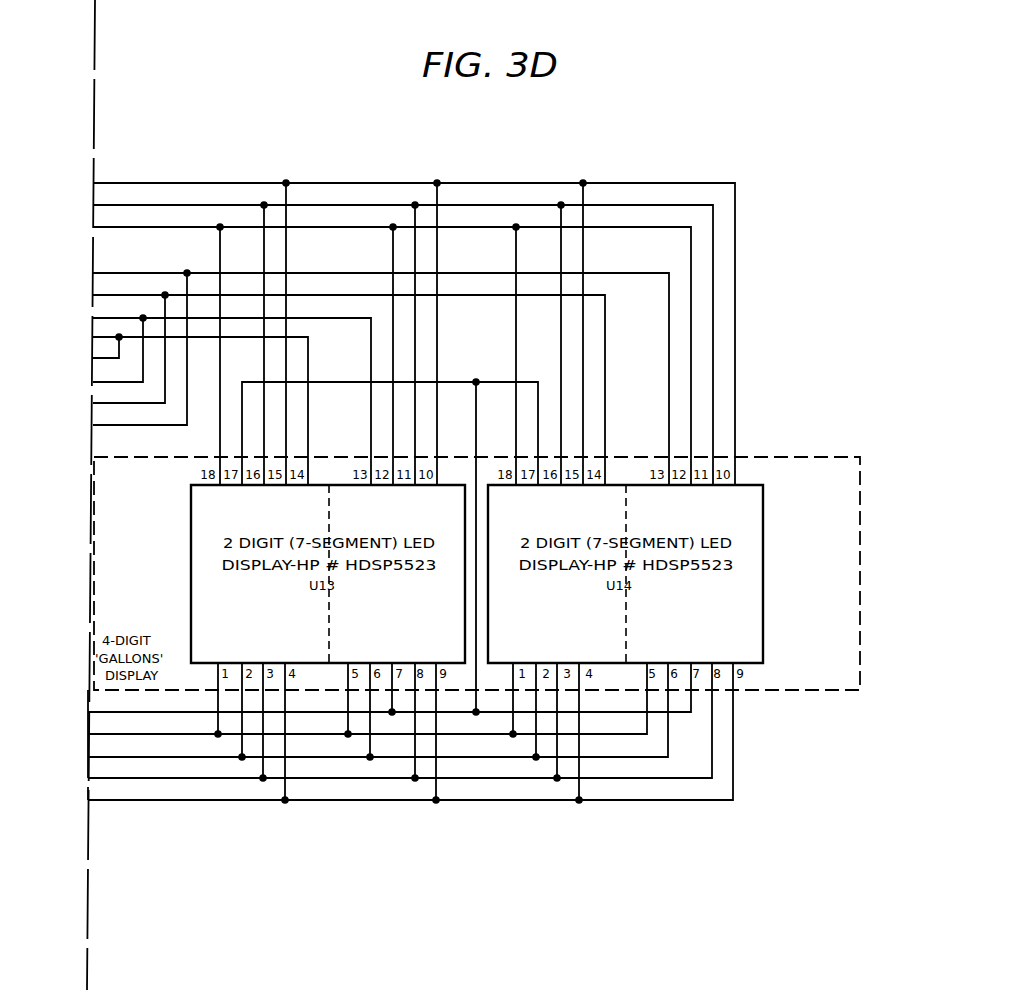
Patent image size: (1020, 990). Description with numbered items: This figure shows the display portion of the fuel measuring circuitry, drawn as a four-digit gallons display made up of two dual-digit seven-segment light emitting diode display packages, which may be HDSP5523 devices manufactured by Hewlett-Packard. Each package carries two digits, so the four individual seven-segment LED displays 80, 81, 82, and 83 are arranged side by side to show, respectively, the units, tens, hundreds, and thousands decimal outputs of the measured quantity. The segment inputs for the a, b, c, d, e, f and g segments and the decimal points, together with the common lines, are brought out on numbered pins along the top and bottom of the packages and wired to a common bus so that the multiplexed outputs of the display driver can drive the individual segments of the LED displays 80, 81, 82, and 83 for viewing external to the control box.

The 7-segment light emitting diode display 80 is at (657, 633).
The 7-segment light emitting diode display 81 is at (499, 633).
The 7-segment light emitting diode display 82 is at (339, 633).
The 7-segment light emitting diode display 83 is at (202, 633).